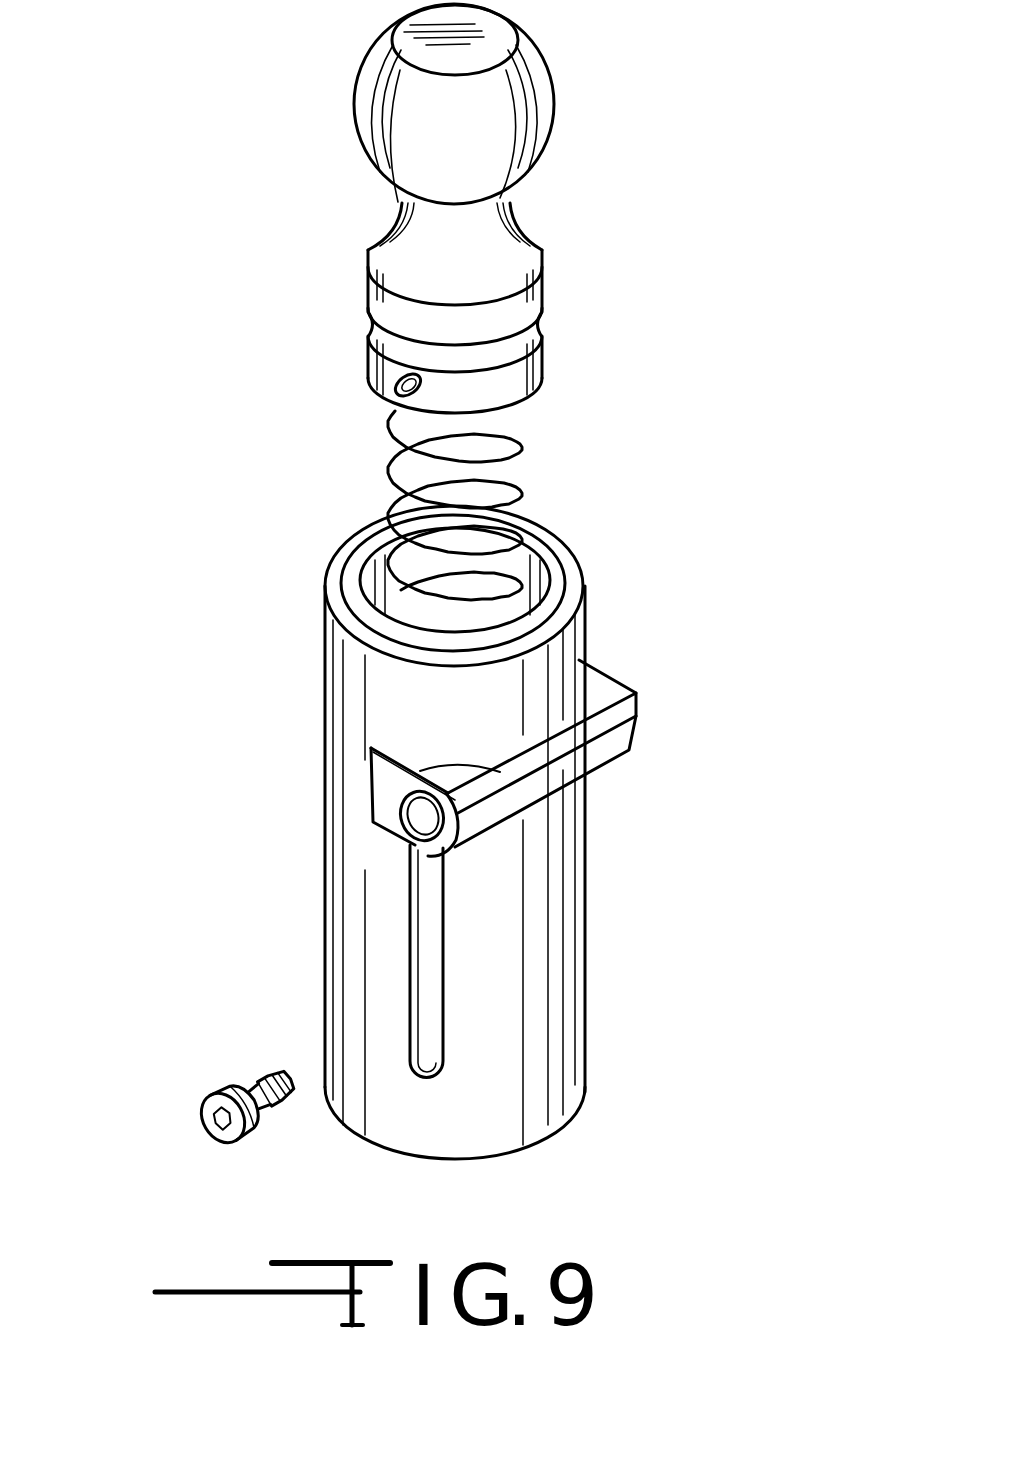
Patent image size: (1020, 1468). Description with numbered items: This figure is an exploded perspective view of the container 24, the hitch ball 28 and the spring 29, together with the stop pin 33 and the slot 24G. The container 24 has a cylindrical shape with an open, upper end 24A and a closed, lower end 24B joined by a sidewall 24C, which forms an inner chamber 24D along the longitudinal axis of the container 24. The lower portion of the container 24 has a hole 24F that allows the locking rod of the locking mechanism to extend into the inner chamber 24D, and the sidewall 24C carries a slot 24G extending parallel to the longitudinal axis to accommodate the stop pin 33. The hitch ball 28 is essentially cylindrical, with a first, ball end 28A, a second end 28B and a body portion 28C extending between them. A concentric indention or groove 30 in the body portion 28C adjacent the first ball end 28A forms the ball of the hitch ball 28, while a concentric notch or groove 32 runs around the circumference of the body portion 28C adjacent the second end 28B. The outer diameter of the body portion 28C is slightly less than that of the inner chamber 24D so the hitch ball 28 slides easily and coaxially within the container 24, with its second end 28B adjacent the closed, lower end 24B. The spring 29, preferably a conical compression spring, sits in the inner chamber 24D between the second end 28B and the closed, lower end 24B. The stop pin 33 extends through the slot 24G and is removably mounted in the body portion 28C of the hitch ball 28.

The container 24 is at (481, 813).
The open, upper end 24A is at (568, 550).
The closed, lower end 24B is at (593, 1076).
The sidewall 24C is at (586, 888).
The inner chamber 24D is at (548, 542).
The hole 24F is at (405, 818).
The slot 24G is at (437, 1079).
The hitch ball 28 is at (484, 216).
The first, ball end 28A is at (548, 60).
The second end 28B is at (490, 341).
The body portion 28C is at (372, 228).
The spring 29 is at (390, 478).
The concentric indention or groove 30 is at (530, 190).
The concentric notch or groove 32 is at (365, 335).
The stop pin 33 is at (430, 998).